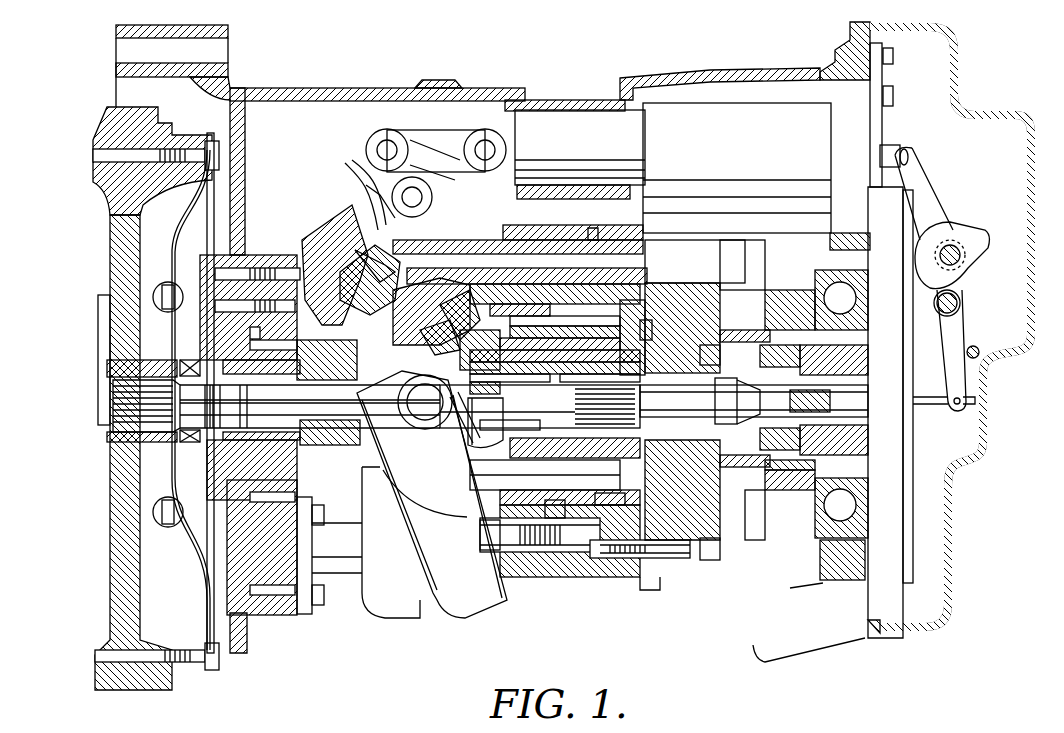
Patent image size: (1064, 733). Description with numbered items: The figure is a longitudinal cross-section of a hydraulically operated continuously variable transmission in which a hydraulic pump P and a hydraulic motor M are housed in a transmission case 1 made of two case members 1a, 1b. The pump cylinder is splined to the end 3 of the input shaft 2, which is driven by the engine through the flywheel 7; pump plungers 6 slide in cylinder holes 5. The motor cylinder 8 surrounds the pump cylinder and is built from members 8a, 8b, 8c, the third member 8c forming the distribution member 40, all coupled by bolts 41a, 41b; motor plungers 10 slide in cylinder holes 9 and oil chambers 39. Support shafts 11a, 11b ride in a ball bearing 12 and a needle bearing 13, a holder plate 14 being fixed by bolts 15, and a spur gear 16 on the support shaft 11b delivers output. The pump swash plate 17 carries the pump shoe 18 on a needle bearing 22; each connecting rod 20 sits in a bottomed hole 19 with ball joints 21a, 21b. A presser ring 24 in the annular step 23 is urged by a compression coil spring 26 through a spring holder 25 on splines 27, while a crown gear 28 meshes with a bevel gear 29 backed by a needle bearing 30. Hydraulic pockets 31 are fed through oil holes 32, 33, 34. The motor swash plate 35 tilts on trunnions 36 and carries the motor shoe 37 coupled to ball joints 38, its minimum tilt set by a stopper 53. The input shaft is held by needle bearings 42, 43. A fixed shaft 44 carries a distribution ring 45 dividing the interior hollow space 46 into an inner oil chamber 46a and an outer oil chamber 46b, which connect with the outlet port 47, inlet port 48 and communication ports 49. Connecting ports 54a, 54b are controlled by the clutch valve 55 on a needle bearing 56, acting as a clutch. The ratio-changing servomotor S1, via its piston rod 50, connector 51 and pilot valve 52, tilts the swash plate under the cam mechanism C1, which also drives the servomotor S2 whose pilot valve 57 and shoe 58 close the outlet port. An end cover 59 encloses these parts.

The transmission case 1 is at (466, 84).
The case member 1a is at (332, 88).
The case member 1b is at (645, 78).
The input shaft 2 is at (112, 399).
The end of input shaft 3 is at (610, 432).
The cylinder holes 5 is at (610, 505).
The pump plungers 6 is at (572, 505).
The flywheel 7 is at (112, 545).
The motor cylinder 8 is at (535, 228).
The first member 8a is at (443, 510).
The second member 8b is at (580, 578).
The third member 8c is at (655, 578).
The cylinder holes 9 is at (592, 240).
The motor plungers 10 is at (470, 244).
The support shaft 11a is at (790, 325).
The support shaft 11b is at (203, 454).
The ball bearing 12 is at (818, 285).
The needle bearing 13 is at (285, 345).
The holder plate 14 is at (902, 330).
The bolts 15 is at (893, 94).
The spur gear 16 is at (352, 308).
The pump swash plate 17 is at (450, 312).
The pump shoe 18 is at (447, 336).
The bottomed hole 19 is at (555, 361).
The connecting rod 20 is at (555, 364).
The ball joint 21a is at (600, 368).
The ball joint 21b is at (512, 374).
The needle bearing 22 is at (492, 284).
The annular step 23 is at (465, 348).
The presser ring 24 is at (480, 370).
The spring holder 25 is at (508, 405).
The compression coil spring 26 is at (540, 428).
The splines 27 is at (485, 423).
The crown gear 28 is at (505, 304).
The bevel gear 29 is at (520, 316).
The needle bearing 30 is at (545, 326).
The hydraulic pockets 31 is at (450, 292).
The oil holes 32 is at (630, 310).
The oil holes 33 is at (555, 338).
The oil holes 34 is at (527, 268).
The motor swash plate 35 is at (308, 240).
The trunnions 36 is at (415, 415).
The motor shoe 37 is at (372, 252).
The ball joints 38 is at (410, 216).
The oil chambers 39 is at (742, 265).
The distribution member 40 is at (683, 283).
The bolts 41a is at (530, 552).
The bolts 41b is at (690, 560).
The needle bearing 42 is at (335, 370).
The needle bearing 43 is at (672, 430).
The fixed shaft 44 is at (798, 462).
The distribution ring 45 is at (715, 352).
The interior hollow space 46 is at (760, 508).
The inner oil chamber 46a is at (741, 473).
The outer oil chamber 46b is at (745, 326).
The outlet port 47 is at (650, 325).
The inlet port 48 is at (640, 468).
The communication ports 49 is at (682, 495).
The piston rod 50 is at (425, 128).
The connector 51 is at (350, 163).
The pilot valve 52 is at (900, 145).
The stopper 53 is at (345, 575).
The connecting port 54a is at (775, 358).
The connecting port 54b is at (775, 450).
The clutch valve 55 is at (834, 398).
The needle bearing 56 is at (834, 440).
The pilot valve 57 is at (932, 412).
The shoe 58 is at (715, 410).
The end cover 59 is at (1034, 216).
The hydraulic motor M is at (493, 214).
The hydraulic pump P is at (612, 300).
The ratio-changing servomotor S1 is at (722, 85).
The servomotor S2 is at (862, 357).
The cam mechanism C1 is at (975, 222).